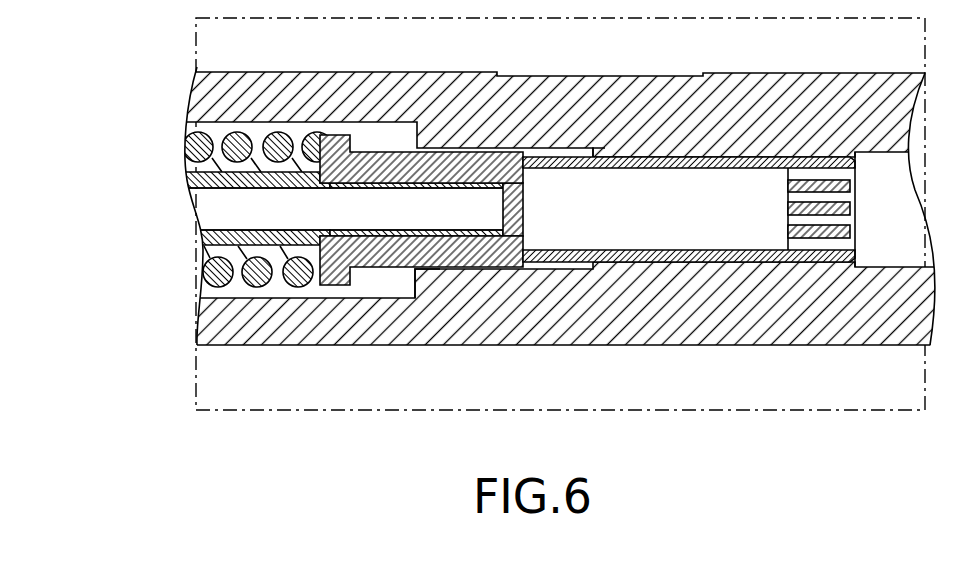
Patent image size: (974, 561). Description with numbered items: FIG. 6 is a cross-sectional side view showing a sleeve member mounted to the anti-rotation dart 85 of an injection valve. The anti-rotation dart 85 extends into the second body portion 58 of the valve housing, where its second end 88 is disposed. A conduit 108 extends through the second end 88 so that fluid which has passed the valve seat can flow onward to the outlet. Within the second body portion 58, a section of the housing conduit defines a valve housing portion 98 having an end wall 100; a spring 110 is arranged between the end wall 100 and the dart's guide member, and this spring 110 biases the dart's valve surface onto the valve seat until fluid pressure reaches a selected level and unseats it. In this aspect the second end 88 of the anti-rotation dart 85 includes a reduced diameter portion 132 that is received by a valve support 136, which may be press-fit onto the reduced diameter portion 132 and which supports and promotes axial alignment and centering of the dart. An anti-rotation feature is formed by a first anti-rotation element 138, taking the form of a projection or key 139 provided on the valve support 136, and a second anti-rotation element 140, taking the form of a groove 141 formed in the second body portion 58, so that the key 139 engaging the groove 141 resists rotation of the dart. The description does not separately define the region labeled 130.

The second body portion 58 is at (683, 333).
The anti-rotation dart 85 is at (207, 173).
The second end 88 is at (472, 188).
The valve housing portion 98 is at (237, 290).
The end wall 100 is at (413, 287).
The conduit 108 is at (207, 212).
The spring 110 is at (212, 276).
The spring chamber 130 is at (360, 296).
The reduced diameter portion 132 is at (335, 185).
The valve support 136 is at (480, 258).
The first anti-rotation element 138 is at (426, 138).
The projection or key 139 is at (507, 165).
The second anti-rotation element 140 is at (606, 149).
The groove 141 is at (588, 140).